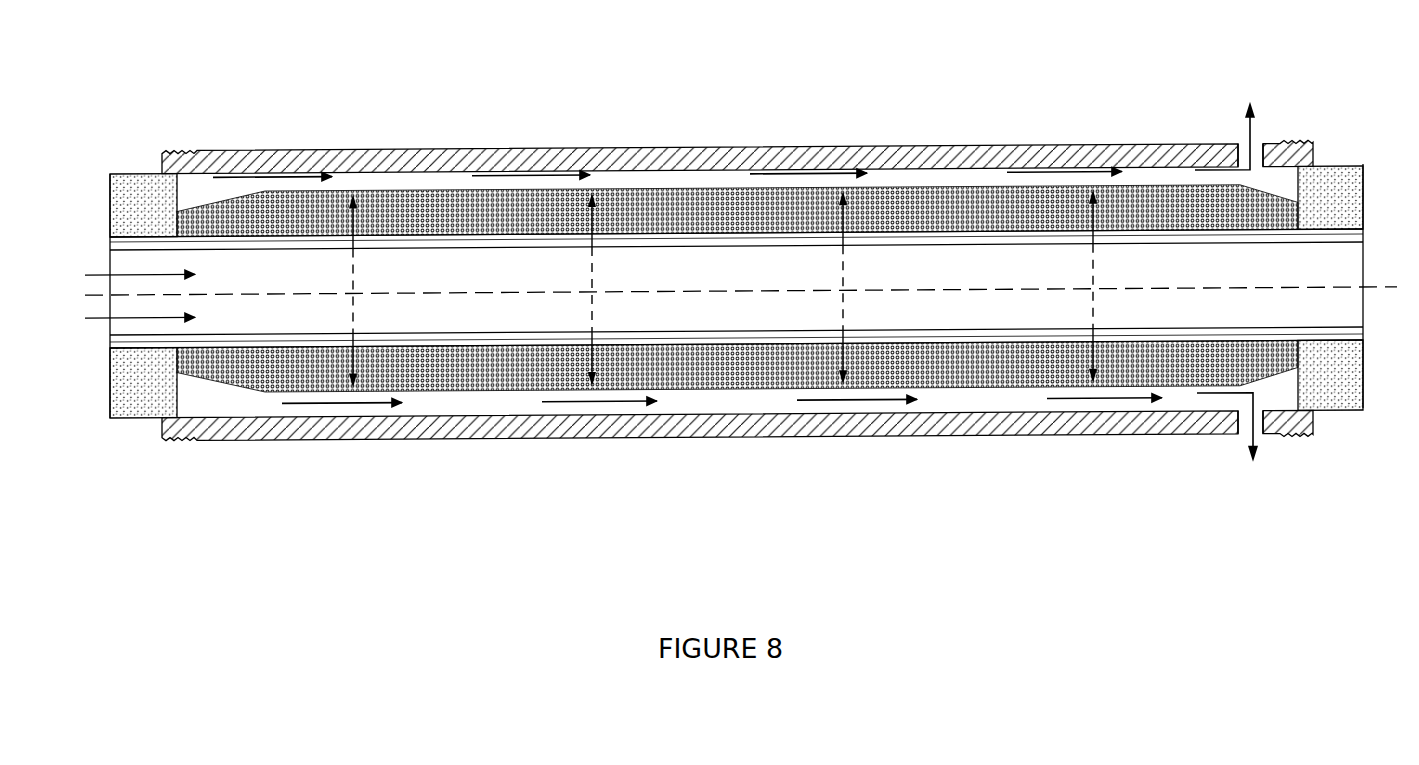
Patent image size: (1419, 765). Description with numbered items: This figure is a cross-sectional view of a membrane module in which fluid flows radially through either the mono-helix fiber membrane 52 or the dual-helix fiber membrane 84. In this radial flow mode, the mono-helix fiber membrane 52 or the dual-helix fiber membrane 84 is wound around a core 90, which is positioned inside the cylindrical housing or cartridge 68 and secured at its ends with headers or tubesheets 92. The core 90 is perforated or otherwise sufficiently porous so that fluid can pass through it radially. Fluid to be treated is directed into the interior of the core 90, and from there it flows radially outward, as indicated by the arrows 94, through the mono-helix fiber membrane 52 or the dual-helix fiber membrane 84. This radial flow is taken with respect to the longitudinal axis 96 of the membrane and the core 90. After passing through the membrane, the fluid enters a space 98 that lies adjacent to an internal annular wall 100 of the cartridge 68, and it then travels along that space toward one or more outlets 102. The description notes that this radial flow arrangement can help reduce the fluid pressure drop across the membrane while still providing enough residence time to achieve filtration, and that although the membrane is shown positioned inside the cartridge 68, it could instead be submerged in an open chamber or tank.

The mono-helix fiber membrane 52 is at (737, 285).
The dual-helix fiber membrane 84 is at (288, 202).
The cartridge 68 is at (623, 158).
The core 90 is at (915, 243).
The tubesheets 92 is at (125, 205).
The arrows 94 is at (842, 258).
The longitudinal axis 96 is at (1388, 289).
The space 98 is at (703, 182).
The internal annular wall 100 is at (917, 166).
The outlets 102 is at (1263, 150).